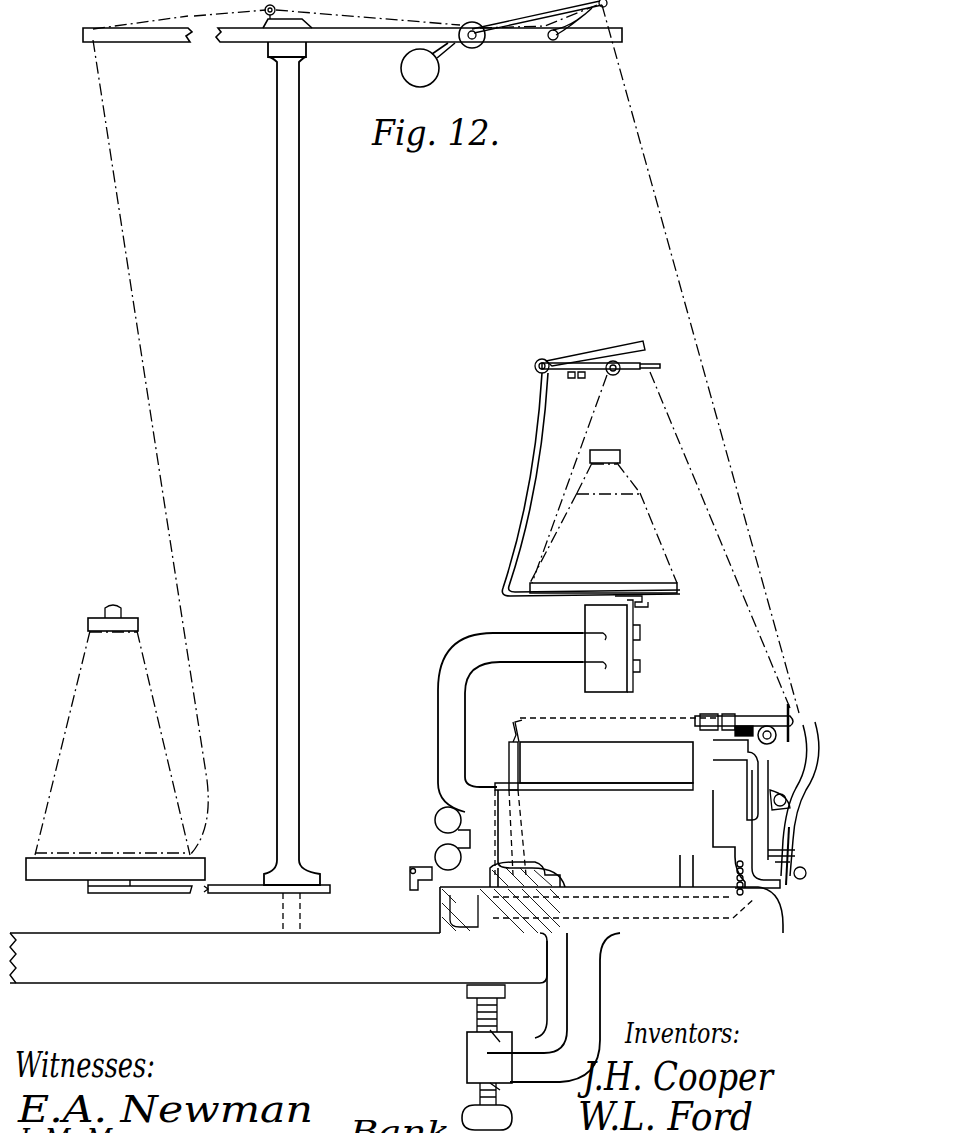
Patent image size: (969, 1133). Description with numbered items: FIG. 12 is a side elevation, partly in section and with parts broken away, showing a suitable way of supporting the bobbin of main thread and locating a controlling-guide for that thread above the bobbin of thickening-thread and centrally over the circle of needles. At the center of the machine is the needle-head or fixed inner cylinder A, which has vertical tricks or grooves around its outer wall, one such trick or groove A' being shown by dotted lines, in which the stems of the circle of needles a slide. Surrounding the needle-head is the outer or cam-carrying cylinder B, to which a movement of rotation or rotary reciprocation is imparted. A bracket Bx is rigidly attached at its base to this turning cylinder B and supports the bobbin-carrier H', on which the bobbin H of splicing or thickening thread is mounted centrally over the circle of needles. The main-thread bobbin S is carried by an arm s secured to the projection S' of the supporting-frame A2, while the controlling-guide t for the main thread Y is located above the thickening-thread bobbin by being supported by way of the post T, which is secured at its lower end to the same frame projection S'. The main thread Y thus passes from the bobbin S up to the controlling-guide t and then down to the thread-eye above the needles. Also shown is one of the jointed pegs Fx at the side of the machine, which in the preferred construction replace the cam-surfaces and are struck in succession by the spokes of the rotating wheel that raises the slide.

The controlling-guide t is at (352, 43).
The post T is at (295, 487).
The main-thread bobbin S is at (115, 749).
The main thread Y is at (446, 430).
The projection of the supporting-frame S' is at (280, 905).
The arm s is at (219, 902).
The bobbin-carrier H' is at (607, 483).
The bobbin H is at (660, 540).
The bracket Bx is at (539, 706).
The needle-head or fixed inner cylinder A is at (607, 754).
The trick or groove A' is at (501, 808).
The needle a is at (523, 729).
The outer or cam-carrying cylinder B is at (658, 799).
The jointed peg Fx is at (410, 885).
The supporting-frame A2 is at (396, 922).